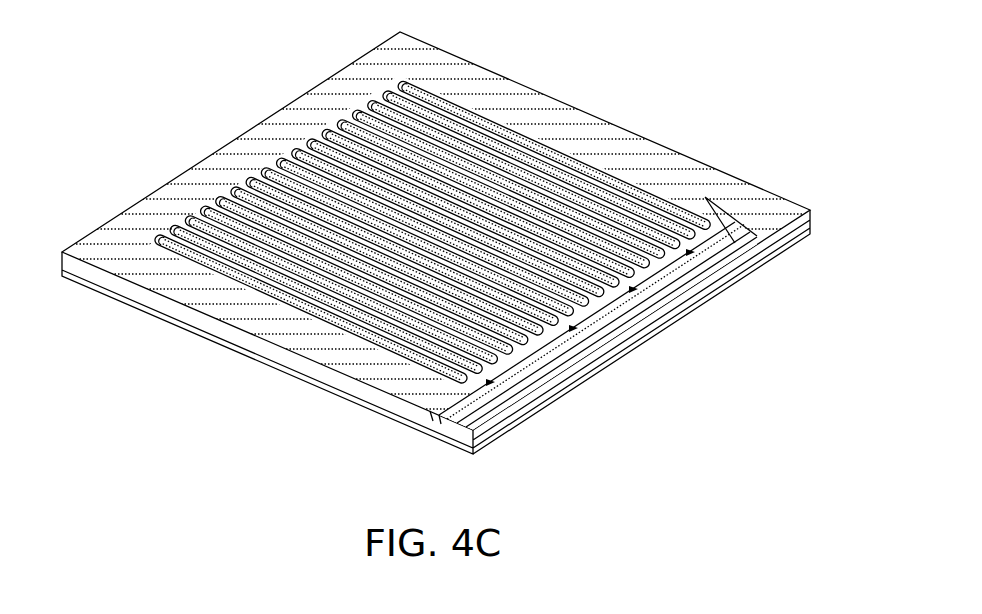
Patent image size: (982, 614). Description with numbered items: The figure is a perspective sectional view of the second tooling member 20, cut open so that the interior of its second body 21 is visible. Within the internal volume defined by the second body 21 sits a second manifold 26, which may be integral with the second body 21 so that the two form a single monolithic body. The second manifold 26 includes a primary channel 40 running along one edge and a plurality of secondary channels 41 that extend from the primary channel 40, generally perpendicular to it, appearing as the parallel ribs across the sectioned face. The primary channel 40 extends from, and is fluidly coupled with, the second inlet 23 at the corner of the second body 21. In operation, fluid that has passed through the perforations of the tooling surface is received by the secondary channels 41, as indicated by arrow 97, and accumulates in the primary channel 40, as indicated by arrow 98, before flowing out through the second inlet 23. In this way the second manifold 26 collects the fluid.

The second tooling member 20 is at (795, 88).
The second body 21 is at (812, 216).
The second inlet 23 is at (440, 418).
The second manifold 26 is at (517, 377).
The primary channel 40 is at (597, 340).
The secondary channels 41 is at (658, 281).
The arrow 97 is at (642, 218).
The arrow 98 is at (725, 271).